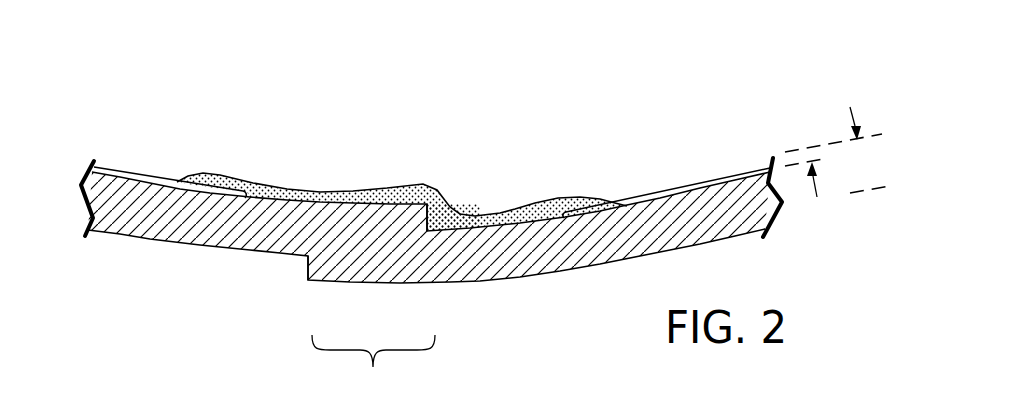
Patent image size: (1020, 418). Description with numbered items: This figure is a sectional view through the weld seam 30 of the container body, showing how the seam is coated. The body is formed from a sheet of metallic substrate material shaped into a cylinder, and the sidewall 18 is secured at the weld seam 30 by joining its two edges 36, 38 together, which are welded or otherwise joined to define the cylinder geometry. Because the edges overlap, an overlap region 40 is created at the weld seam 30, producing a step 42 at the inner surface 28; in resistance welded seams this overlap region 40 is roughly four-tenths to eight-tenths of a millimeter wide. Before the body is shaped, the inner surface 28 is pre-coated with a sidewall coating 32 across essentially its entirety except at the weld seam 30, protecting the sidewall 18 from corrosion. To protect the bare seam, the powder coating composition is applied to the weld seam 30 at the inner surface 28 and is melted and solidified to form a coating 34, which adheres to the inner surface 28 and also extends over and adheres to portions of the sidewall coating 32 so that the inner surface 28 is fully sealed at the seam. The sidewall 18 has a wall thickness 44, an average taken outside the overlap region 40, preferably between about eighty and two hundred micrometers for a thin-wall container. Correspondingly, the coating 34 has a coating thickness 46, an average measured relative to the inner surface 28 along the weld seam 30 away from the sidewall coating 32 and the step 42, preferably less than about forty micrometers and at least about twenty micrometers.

The sidewall 18 is at (203, 322).
The inner surface 28 is at (288, 200).
The weld seam 30 is at (428, 116).
The sidewall coating 32 is at (118, 172).
The coating 34 is at (395, 186).
The edge 36 is at (308, 270).
The edge 38 is at (430, 219).
The overlap region 40 is at (373, 366).
The step 42 is at (468, 208).
The wall thickness 44 is at (868, 203).
The coating thickness 46 is at (803, 132).